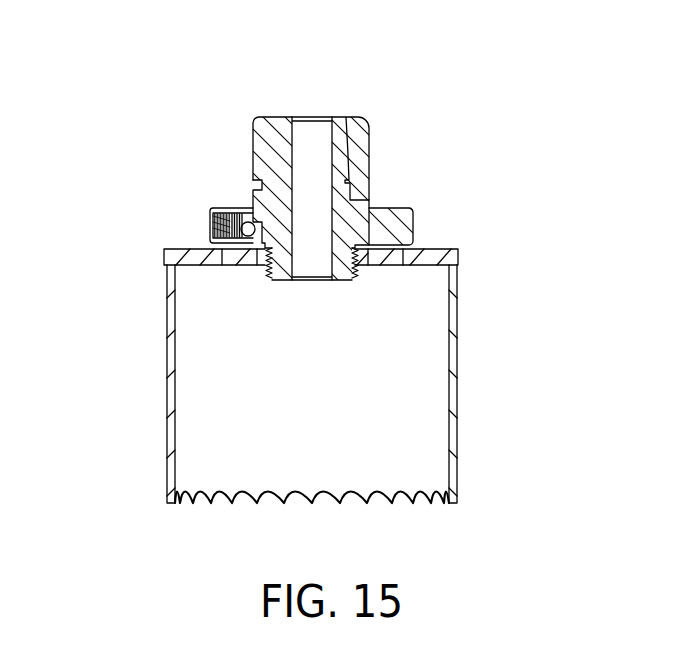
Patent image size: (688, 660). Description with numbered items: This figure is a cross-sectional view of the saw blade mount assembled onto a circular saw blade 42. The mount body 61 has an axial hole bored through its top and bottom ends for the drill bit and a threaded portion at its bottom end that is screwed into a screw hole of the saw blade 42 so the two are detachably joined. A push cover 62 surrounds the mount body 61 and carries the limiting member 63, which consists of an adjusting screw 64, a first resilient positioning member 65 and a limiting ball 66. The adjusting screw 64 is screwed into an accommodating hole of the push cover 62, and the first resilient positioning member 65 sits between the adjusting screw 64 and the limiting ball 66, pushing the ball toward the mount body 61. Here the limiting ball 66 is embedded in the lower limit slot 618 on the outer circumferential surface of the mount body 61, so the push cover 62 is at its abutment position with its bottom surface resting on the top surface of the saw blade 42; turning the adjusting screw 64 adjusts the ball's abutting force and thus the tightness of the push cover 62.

The mount body 61 is at (323, 96).
The push cover 62 is at (405, 216).
The limiting member 63 is at (118, 125).
The adjusting screw 64 is at (210, 229).
The first resilient positioning member 65 is at (236, 215).
The limiting ball 66 is at (247, 222).
The lower limit slot 618 is at (268, 262).
The saw blade 42 is at (456, 368).